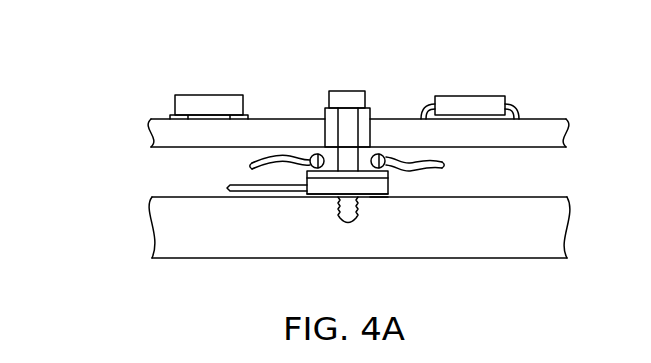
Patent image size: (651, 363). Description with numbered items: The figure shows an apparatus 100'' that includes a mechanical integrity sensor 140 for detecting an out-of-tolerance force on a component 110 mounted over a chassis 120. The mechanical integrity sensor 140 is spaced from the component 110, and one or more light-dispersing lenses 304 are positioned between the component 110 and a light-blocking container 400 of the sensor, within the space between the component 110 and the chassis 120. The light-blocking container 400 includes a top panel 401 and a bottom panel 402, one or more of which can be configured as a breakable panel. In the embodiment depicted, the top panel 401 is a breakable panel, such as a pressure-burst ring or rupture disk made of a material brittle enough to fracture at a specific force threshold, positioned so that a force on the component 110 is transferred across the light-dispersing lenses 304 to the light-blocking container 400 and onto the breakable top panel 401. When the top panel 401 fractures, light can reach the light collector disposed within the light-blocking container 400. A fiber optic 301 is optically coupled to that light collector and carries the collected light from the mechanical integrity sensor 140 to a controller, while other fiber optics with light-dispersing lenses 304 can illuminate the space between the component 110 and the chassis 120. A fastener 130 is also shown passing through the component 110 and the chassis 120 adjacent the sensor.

The apparatus 100'' is at (56, 36).
The component 110 is at (150, 129).
The chassis 120 is at (150, 229).
The screw 130 is at (347, 92).
The light-dispersing lens 304 is at (313, 154).
The top panel 401 is at (389, 173).
The bottom panel 402 is at (389, 196).
The light-blocking container 400 is at (322, 181).
The fiber optic 301 is at (252, 186).
The mechanical integrity sensor 140 is at (377, 198).